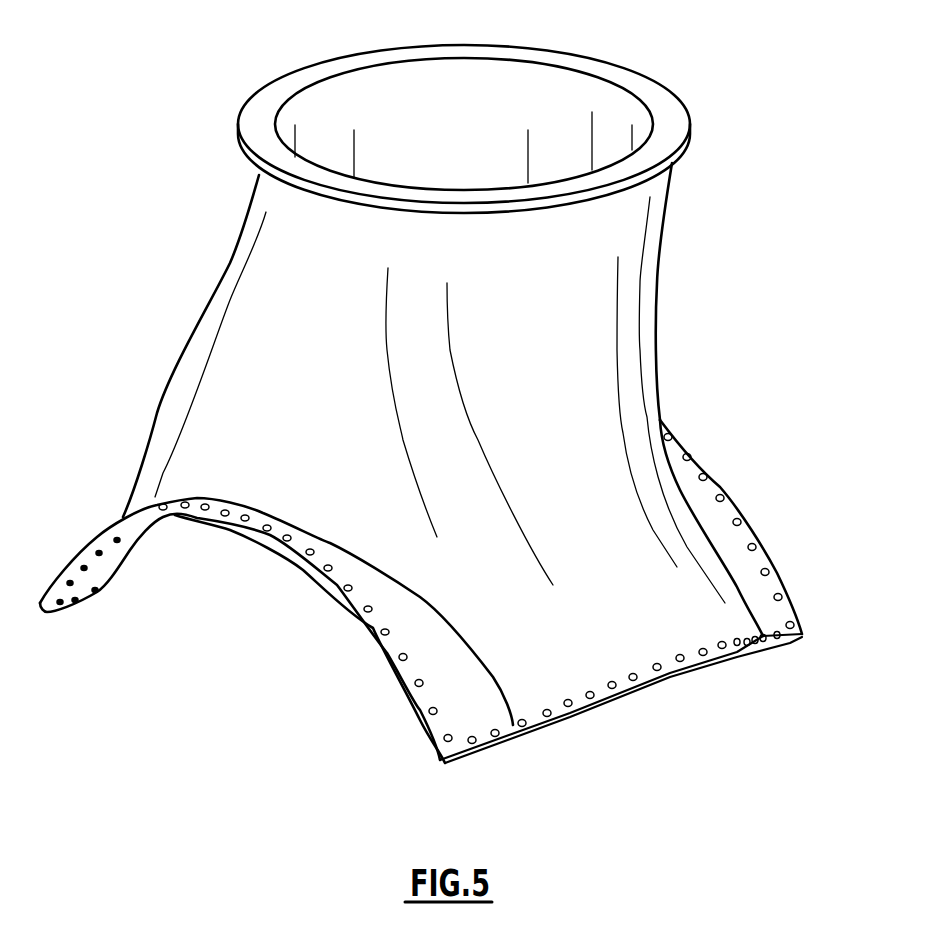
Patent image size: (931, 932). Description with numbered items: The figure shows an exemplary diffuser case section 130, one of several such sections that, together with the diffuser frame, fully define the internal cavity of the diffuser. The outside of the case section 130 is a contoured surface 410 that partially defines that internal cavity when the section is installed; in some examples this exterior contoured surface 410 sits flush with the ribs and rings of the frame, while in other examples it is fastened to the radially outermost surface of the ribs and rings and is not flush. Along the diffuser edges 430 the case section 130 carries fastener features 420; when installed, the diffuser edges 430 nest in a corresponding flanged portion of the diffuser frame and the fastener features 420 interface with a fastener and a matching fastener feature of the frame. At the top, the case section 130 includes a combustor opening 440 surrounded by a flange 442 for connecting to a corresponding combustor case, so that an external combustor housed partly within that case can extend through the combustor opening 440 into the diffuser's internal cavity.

The diffuser case section 130 is at (185, 275).
The contoured surface 410 is at (613, 500).
The fastener features 420 is at (385, 631).
The diffuser edges 430 is at (207, 518).
The combustor opening 440 is at (510, 115).
The flange 442 is at (666, 133).